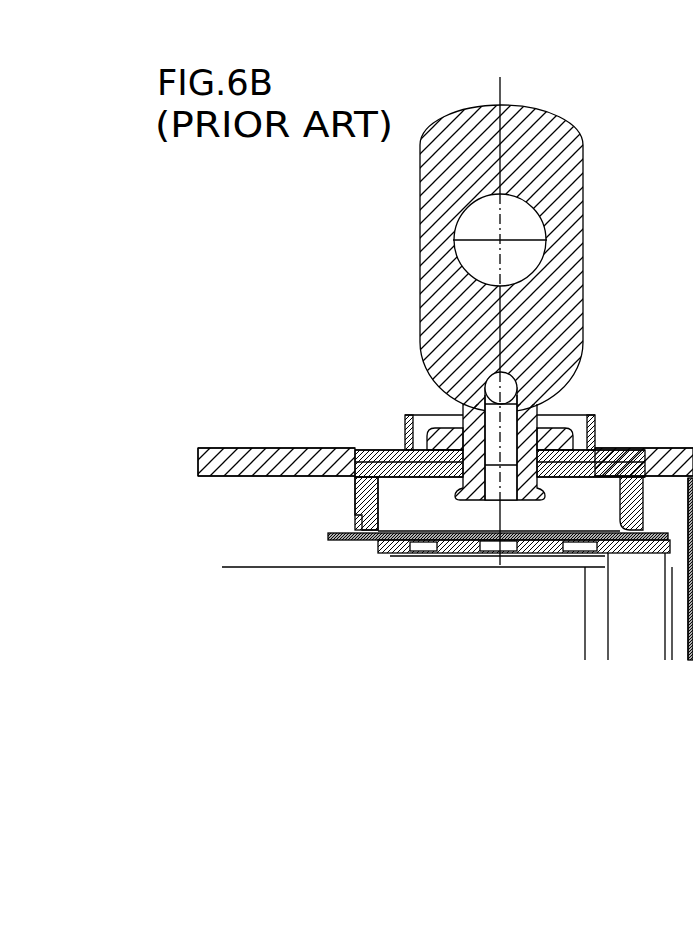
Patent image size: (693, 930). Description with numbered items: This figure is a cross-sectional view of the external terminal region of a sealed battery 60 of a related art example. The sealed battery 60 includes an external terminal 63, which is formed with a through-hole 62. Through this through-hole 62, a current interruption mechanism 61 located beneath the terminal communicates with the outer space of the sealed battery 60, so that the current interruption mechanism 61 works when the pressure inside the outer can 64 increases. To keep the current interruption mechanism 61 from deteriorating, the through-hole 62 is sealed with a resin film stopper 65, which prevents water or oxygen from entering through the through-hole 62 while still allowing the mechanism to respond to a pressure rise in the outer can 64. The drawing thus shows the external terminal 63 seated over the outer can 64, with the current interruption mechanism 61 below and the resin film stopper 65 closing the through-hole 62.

The sealed battery 60 is at (240, 263).
The current interruption mechanism 61 is at (376, 541).
The through-hole 62 is at (463, 412).
The external terminal 63 is at (583, 183).
The outer can 64 is at (238, 543).
The resin film stopper 65 is at (542, 430).